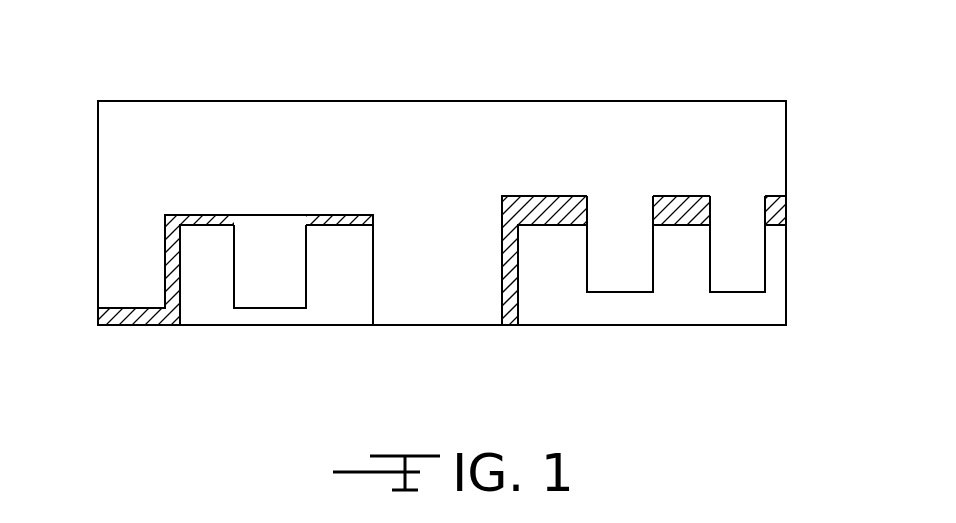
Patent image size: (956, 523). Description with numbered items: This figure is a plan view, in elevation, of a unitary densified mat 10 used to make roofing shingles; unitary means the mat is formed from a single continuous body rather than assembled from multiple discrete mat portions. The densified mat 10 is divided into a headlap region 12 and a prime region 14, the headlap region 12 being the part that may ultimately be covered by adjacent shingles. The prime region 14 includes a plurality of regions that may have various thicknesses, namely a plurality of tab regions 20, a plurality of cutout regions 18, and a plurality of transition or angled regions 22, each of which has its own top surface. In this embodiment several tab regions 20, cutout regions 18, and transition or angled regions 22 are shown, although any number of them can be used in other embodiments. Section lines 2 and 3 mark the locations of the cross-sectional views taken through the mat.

The densified mat 10 is at (156, 50).
The headlap region 12 is at (820, 92).
The prime region 14 is at (819, 195).
The cutout regions 18 is at (205, 313).
The tab regions 20 is at (108, 254).
The transition or angled regions 22 is at (202, 215).
The section line 2 is at (62, 228).
The section line 3 is at (820, 50).